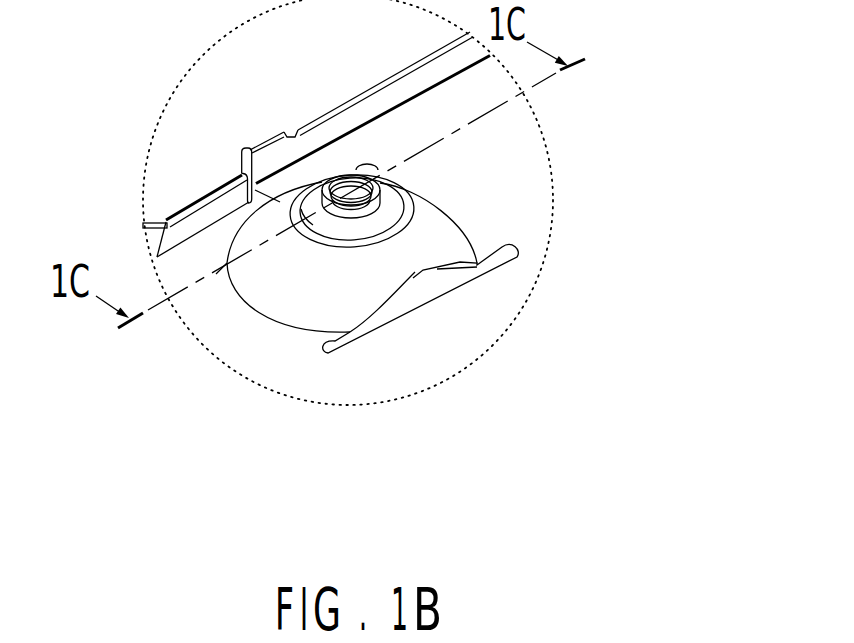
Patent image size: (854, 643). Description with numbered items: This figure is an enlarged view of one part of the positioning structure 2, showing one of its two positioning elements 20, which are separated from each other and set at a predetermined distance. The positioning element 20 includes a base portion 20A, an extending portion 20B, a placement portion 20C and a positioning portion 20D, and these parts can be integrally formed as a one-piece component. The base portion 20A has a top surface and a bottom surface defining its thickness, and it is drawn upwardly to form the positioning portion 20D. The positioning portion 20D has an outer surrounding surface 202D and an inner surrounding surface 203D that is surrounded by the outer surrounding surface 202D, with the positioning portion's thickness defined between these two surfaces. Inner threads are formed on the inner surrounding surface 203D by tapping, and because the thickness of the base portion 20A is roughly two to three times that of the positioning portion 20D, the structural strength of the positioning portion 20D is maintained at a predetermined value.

The positioning structure 2 is at (258, 133).
The outer surrounding surface 202D is at (312, 218).
The inner surrounding surface 203D is at (348, 187).
The positioning element 20 is at (365, 275).
The base portion 20A is at (238, 340).
The extending portion 20B is at (305, 298).
The placement portion 20C is at (349, 251).
The positioning portion 20D is at (370, 210).